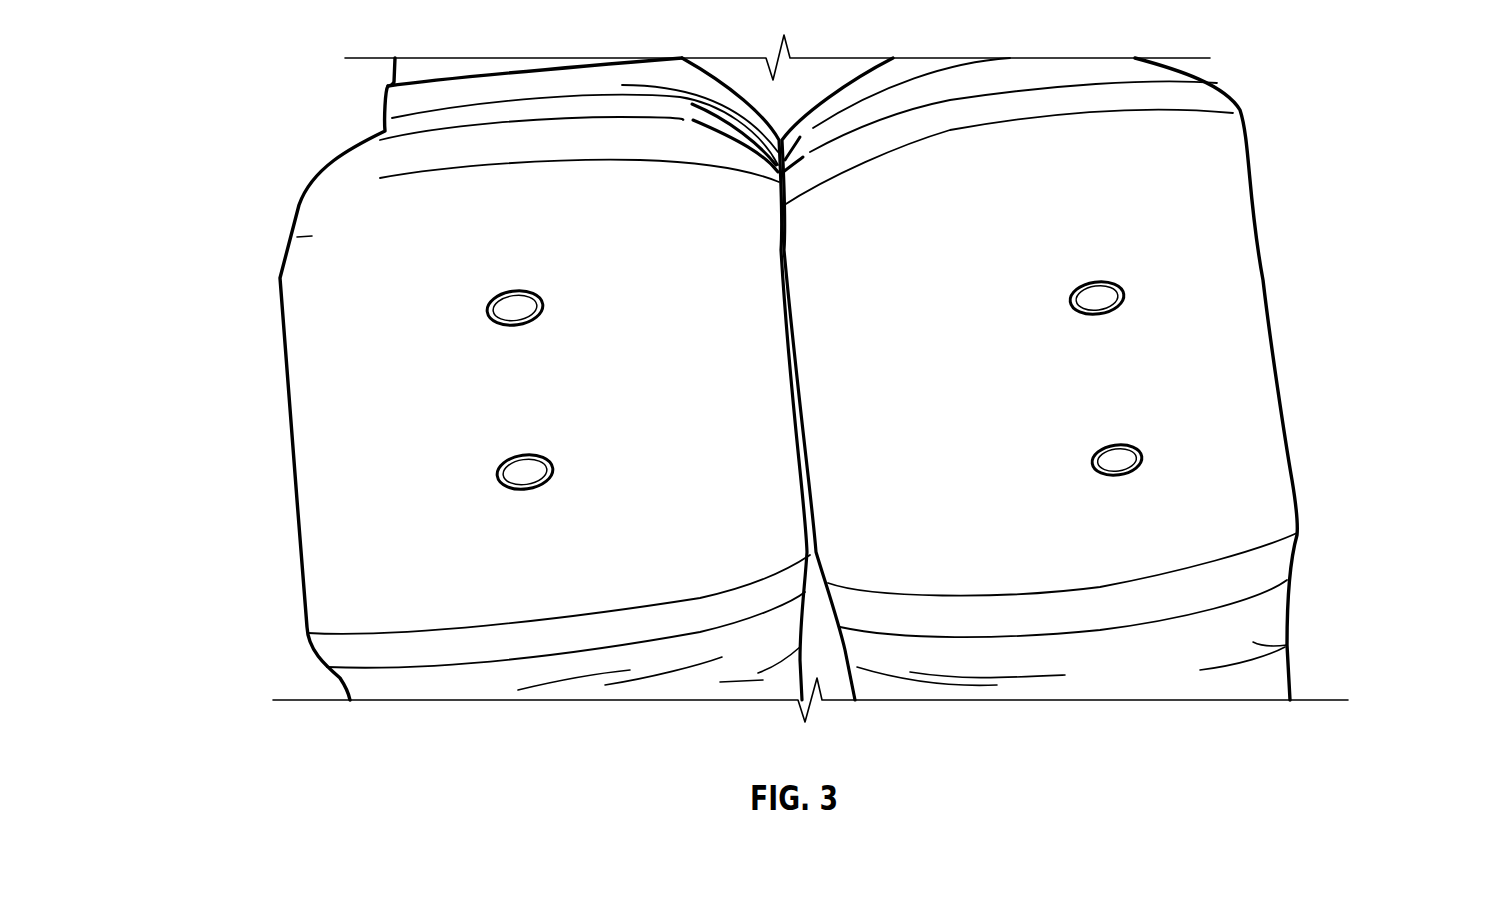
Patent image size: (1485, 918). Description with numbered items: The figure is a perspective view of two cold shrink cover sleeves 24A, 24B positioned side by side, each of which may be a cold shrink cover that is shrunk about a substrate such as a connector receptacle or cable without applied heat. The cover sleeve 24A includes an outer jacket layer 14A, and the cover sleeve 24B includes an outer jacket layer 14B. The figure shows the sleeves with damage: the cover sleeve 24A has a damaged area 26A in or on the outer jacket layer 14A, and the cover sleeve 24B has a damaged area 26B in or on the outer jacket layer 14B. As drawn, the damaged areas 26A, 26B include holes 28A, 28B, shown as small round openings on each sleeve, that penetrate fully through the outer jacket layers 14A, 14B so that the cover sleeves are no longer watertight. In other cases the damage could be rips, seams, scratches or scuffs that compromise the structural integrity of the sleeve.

The outer jacket layer 14A is at (292, 322).
The cover sleeve 24A is at (215, 410).
The damaged area 26A is at (447, 443).
The hole 28A is at (537, 306).
The outer jacket layer 14B is at (1268, 493).
The cover sleeve 24B is at (1345, 550).
The damaged area 26B is at (1172, 350).
The hole 28B is at (1118, 296).